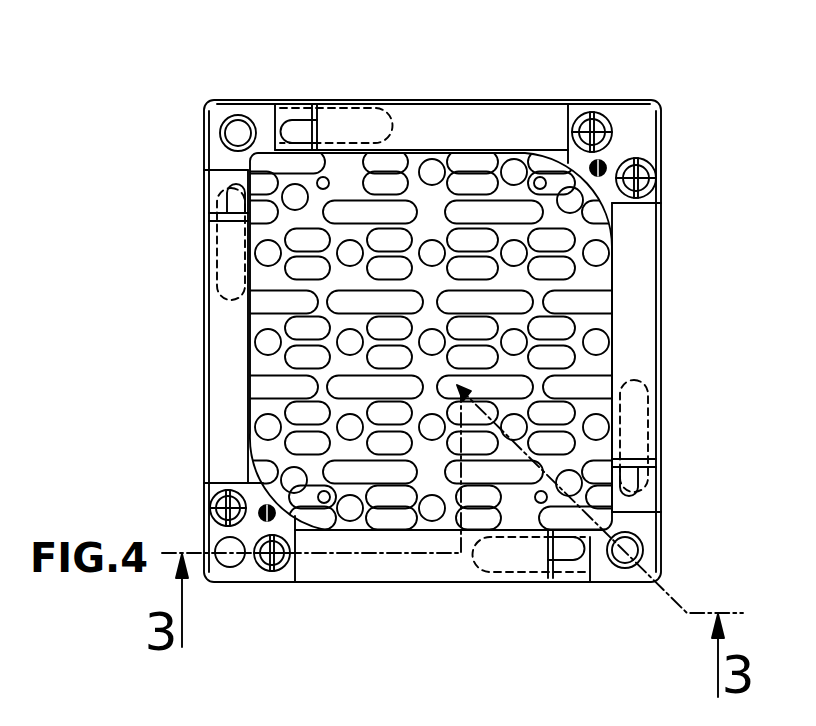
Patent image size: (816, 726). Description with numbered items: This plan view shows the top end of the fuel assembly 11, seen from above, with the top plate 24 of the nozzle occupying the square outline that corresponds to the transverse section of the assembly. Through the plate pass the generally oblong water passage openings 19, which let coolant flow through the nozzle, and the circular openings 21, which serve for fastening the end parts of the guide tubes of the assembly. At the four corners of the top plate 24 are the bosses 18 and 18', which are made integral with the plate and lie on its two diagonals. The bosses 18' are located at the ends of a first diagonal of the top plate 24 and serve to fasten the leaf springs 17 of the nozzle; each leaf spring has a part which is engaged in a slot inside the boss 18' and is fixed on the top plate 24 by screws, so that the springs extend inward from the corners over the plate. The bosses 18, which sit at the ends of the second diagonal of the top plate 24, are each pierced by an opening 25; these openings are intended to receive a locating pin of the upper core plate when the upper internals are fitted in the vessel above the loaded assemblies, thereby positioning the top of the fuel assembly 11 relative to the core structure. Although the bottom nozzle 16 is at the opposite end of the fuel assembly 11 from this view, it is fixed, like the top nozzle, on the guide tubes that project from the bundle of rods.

The fuel assembly 11 is at (434, 284).
The bottom nozzle 16 is at (625, 560).
The leaf springs 17 is at (510, 127).
The bosses 18 is at (422, 338).
The bosses 18' is at (401, 310).
The water passage openings 19 is at (513, 303).
The circular openings 21 is at (352, 252).
The top plate 24 is at (662, 408).
The opening 25 is at (237, 135).